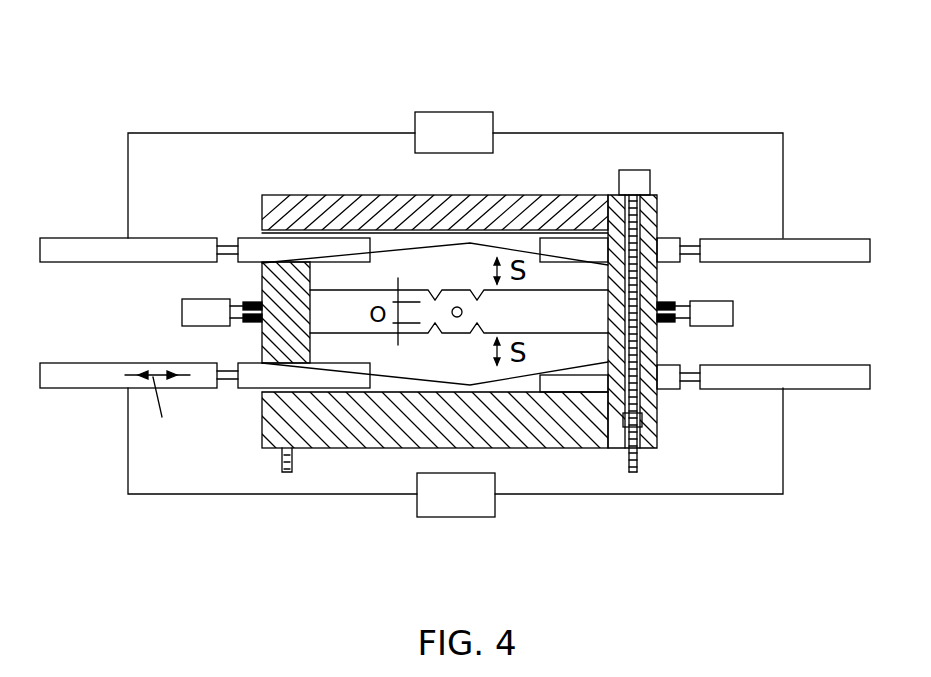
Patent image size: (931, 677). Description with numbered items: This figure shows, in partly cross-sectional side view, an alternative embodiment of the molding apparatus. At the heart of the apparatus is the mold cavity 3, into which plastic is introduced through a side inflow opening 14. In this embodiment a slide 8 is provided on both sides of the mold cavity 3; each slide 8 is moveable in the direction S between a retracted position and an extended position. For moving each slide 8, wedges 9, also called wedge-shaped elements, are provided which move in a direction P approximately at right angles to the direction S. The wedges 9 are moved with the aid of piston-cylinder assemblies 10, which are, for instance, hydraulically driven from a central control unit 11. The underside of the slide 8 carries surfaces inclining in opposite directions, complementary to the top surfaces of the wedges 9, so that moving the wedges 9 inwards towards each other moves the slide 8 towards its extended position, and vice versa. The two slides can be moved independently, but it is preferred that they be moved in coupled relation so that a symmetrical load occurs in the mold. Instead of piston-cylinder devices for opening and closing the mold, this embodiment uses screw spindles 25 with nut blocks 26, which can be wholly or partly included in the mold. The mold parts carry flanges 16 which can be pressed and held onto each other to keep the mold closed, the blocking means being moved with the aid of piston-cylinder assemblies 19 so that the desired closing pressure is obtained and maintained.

The mold cavity 3 is at (330, 312).
The slide 8 is at (418, 264).
The wedges 9 is at (256, 254).
The piston-cylinder assemblies 10 is at (82, 235).
The central control unit 11 is at (463, 125).
The inflow opening 14 is at (455, 318).
The flanges 16 is at (255, 300).
The piston-cylinder assemblies 19 is at (195, 312).
The screw spindles 25 is at (630, 225).
The nut blocks 26 is at (652, 430).